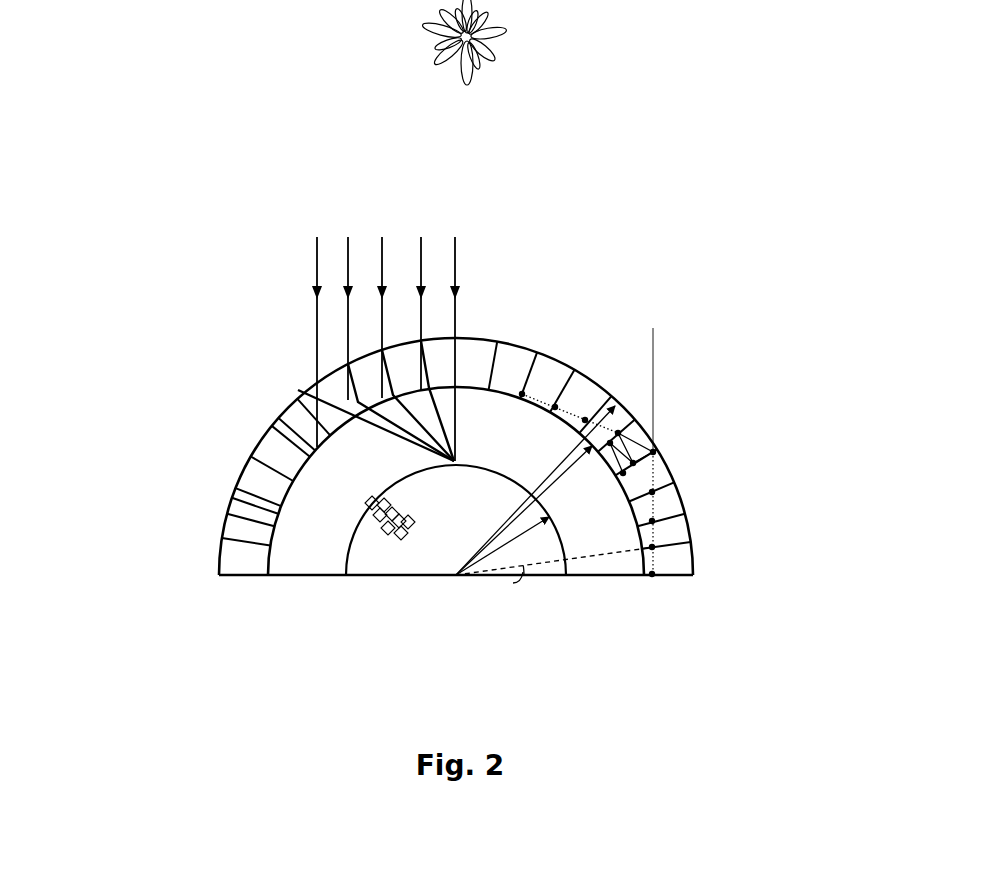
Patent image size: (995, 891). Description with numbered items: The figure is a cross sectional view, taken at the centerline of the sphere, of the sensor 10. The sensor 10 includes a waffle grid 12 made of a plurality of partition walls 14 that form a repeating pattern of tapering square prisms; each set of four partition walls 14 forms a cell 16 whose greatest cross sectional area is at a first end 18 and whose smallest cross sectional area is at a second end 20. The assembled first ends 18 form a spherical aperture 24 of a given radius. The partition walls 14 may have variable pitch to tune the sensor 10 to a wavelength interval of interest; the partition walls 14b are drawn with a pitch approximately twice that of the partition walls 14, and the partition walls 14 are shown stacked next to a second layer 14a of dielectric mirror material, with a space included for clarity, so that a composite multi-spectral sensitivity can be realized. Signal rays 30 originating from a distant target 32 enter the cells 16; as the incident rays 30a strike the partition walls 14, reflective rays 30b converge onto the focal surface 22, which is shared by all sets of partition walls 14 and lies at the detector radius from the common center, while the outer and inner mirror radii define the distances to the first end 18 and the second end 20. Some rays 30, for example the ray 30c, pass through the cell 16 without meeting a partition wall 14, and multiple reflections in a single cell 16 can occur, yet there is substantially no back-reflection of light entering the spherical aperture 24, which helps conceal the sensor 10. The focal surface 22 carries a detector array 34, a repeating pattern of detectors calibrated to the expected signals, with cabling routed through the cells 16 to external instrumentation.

The sensor 10 is at (363, 178).
The waffle grid 12 is at (454, 600).
The spherical aperture 24 is at (268, 588).
The partition walls 14 is at (250, 495).
The second layer 14a is at (342, 366).
The partition walls 14b is at (257, 436).
The cell 16 is at (270, 420).
The first end 18 is at (307, 418).
The second end 20 is at (317, 453).
The focal surface 22 is at (566, 538).
The signal rays 30 is at (381, 236).
The incident rays 30a is at (313, 236).
The reflective rays 30b is at (323, 420).
The ray passing through 30c is at (455, 247).
The distant target 32 is at (522, 42).
The detector array 34 is at (372, 500).